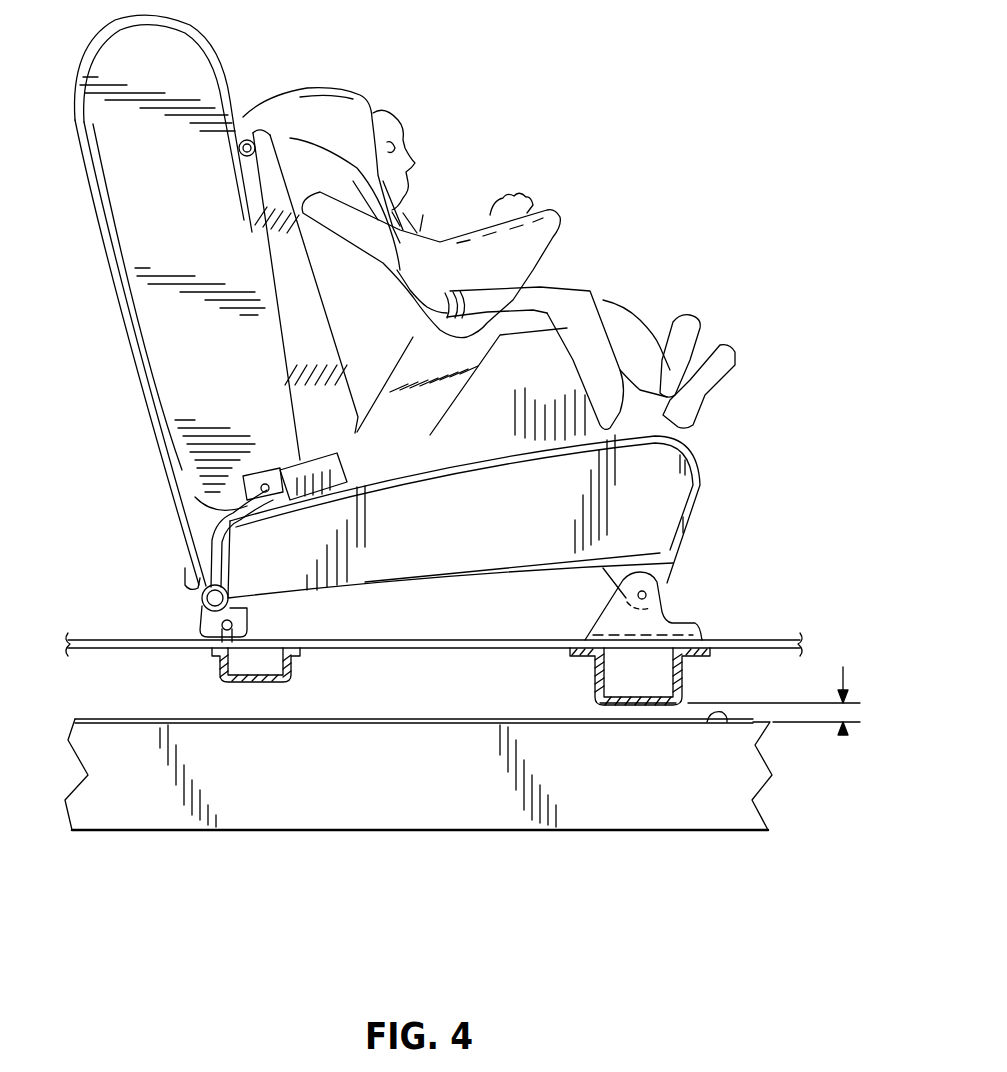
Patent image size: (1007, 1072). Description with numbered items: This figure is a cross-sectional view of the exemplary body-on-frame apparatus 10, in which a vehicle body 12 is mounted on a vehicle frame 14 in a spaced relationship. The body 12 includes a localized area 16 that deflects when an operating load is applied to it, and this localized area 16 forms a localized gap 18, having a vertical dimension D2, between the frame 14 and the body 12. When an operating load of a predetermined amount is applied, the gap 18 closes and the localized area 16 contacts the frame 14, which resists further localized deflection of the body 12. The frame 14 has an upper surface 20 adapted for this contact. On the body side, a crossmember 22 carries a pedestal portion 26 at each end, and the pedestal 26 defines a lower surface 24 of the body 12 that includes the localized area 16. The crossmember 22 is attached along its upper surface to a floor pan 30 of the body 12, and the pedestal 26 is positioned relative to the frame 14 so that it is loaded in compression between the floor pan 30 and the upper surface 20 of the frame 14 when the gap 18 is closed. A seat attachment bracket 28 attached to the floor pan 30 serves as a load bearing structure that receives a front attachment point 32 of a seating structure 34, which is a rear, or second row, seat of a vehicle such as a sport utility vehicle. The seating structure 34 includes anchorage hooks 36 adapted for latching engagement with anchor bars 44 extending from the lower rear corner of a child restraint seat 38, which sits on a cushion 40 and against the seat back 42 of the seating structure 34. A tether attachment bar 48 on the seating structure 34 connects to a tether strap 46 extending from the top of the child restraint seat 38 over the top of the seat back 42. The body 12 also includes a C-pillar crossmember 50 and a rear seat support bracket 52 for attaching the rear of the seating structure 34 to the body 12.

The body-on-frame apparatus 10 is at (718, 247).
The vehicle body 12 is at (594, 668).
The vehicle frame 14 is at (372, 790).
The localized area 16 is at (637, 707).
The localized gap 18 is at (662, 720).
The upper surface 20 is at (720, 722).
The crossmember 22 is at (683, 676).
The lower surface 24 is at (627, 707).
The pedestal portion 26 is at (594, 662).
The seat attachment bracket 28 is at (648, 625).
The floor pan 30 is at (792, 636).
The front attachment point 32 is at (648, 594).
The seating structure 34 is at (709, 453).
The anchorage hooks 36 is at (268, 486).
The child restraint seat 38 is at (348, 313).
The cushion 40 is at (528, 550).
The seat back 42 is at (177, 178).
The anchor bars 44 is at (335, 500).
The tether strap 46 is at (142, 382).
The tether attachment bar 48 is at (185, 582).
The C-pillar crossmember 50 is at (293, 670).
The rear seat support bracket 52 is at (206, 626).
The vertical dimension D2 is at (843, 728).